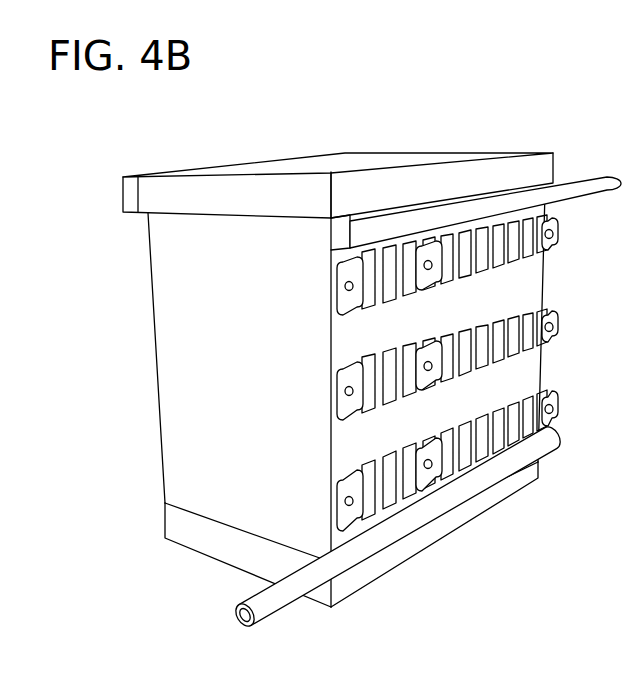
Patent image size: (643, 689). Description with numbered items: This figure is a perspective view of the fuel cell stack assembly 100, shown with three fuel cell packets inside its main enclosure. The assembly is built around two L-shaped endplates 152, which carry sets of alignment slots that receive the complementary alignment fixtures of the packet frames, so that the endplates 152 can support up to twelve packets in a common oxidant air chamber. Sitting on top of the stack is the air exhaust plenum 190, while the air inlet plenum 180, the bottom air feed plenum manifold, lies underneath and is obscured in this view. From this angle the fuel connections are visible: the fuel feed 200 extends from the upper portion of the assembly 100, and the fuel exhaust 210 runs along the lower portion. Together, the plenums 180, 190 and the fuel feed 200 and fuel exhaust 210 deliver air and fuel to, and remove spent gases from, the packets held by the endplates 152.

The fuel cell stack assembly 100 is at (495, 128).
The L-shaped endplate 152 is at (165, 307).
The air inlet plenum manifold 180 is at (183, 527).
The air exhaust plenum 190 is at (257, 167).
The fuel feed 200 is at (577, 181).
The fuel exhaust 210 is at (272, 602).